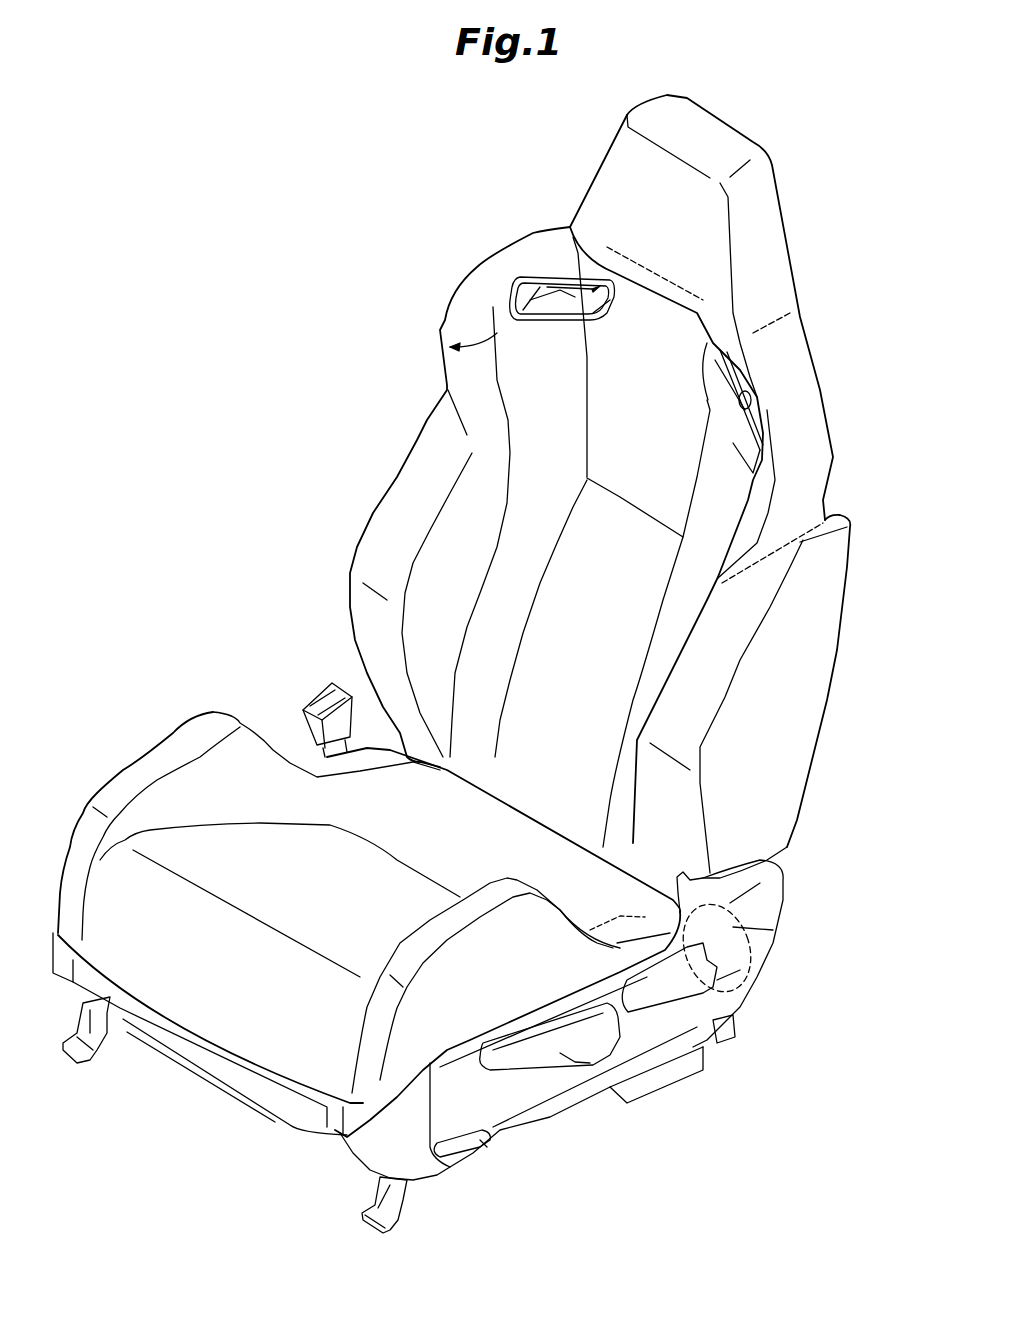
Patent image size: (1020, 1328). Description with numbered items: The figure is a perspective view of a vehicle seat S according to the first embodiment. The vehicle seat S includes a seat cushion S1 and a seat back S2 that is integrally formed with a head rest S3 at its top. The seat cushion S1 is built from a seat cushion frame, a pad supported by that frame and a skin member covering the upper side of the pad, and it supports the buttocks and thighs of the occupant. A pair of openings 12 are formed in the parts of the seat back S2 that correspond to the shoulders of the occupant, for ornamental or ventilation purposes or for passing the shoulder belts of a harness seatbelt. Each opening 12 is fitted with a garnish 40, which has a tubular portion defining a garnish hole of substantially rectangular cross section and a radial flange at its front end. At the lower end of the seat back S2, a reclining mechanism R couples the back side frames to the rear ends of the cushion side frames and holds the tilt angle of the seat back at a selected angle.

The vehicle seat S is at (470, 130).
The seat cushion S1 is at (303, 897).
The seat back S2 is at (607, 448).
The head rest S3 is at (630, 180).
The garnish 40 is at (523, 280).
The opening 12 is at (597, 303).
The reclining mechanism R is at (783, 887).